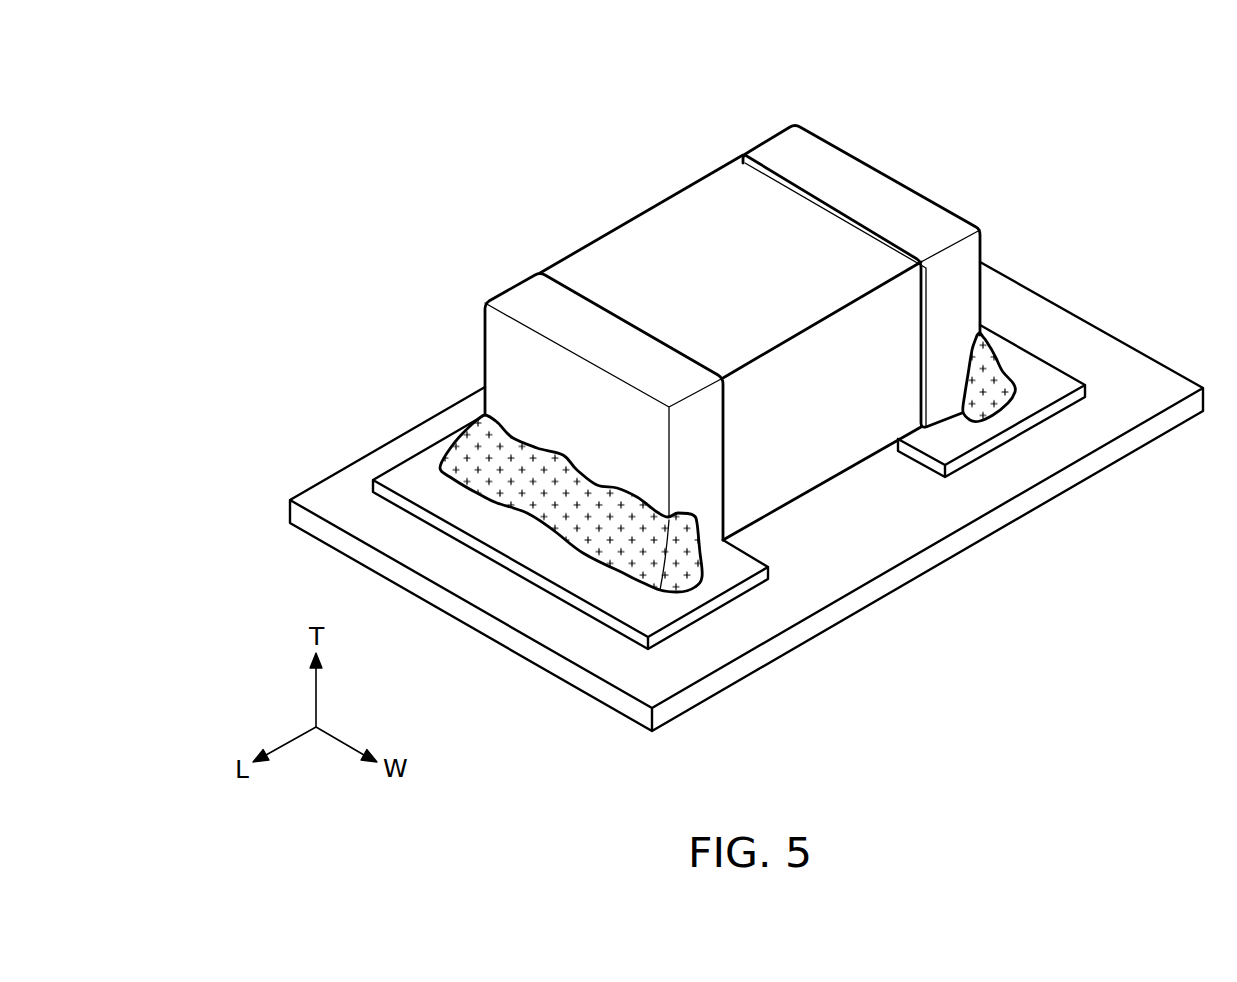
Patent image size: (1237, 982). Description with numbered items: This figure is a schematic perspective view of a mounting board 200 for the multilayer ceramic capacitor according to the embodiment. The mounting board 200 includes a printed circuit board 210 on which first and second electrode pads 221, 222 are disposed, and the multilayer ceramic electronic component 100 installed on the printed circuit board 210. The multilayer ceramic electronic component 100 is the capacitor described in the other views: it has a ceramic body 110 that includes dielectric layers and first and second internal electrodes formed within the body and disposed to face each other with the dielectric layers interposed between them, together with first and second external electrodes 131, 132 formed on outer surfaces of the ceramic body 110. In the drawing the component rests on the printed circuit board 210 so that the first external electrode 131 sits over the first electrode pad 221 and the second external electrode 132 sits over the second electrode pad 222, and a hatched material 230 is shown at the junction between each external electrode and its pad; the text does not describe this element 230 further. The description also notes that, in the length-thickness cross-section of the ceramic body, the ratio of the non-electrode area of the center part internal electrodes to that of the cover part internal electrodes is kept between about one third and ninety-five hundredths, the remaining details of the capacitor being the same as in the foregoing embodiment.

The multilayer ceramic electronic component 100 is at (857, 142).
The ceramic body 110 is at (707, 210).
The first external electrode 131 is at (710, 462).
The second external electrode 132 is at (957, 278).
The mounting board 200 is at (492, 89).
The printed circuit board 210 is at (918, 568).
The first electrode pad 221 is at (702, 615).
The second electrode pad 222 is at (1003, 425).
The solder 230 is at (981, 356).